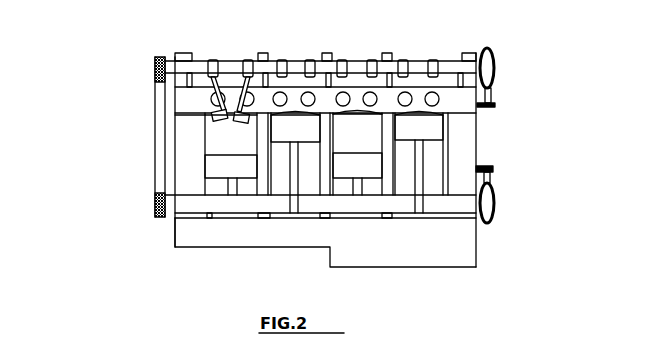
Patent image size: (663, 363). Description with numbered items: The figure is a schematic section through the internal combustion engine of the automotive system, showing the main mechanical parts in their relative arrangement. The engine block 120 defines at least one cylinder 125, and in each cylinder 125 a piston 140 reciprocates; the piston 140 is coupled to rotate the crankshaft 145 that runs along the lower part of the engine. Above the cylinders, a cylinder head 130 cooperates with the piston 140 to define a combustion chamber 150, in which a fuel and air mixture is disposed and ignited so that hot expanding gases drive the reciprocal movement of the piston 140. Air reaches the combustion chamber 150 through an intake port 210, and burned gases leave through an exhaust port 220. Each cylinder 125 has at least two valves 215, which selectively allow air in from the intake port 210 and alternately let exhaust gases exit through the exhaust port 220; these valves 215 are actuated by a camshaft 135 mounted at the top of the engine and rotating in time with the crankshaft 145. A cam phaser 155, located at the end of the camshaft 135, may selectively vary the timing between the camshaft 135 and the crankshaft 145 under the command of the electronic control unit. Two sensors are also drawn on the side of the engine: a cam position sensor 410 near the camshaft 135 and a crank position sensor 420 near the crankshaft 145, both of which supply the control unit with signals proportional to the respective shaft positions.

The engine block 120 is at (175, 153).
The cylinder 125 is at (331, 140).
The cylinder head 130 is at (175, 108).
The camshaft 135 is at (230, 62).
The piston 140 is at (358, 163).
The crankshaft 145 is at (202, 207).
The combustion chamber 150 is at (420, 116).
The cam phaser 155 is at (157, 65).
The intake port 210 is at (333, 136).
The valves 215 is at (212, 105).
The exhaust port 220 is at (304, 92).
The cam position sensor 410 is at (493, 103).
The crank position sensor 420 is at (492, 172).